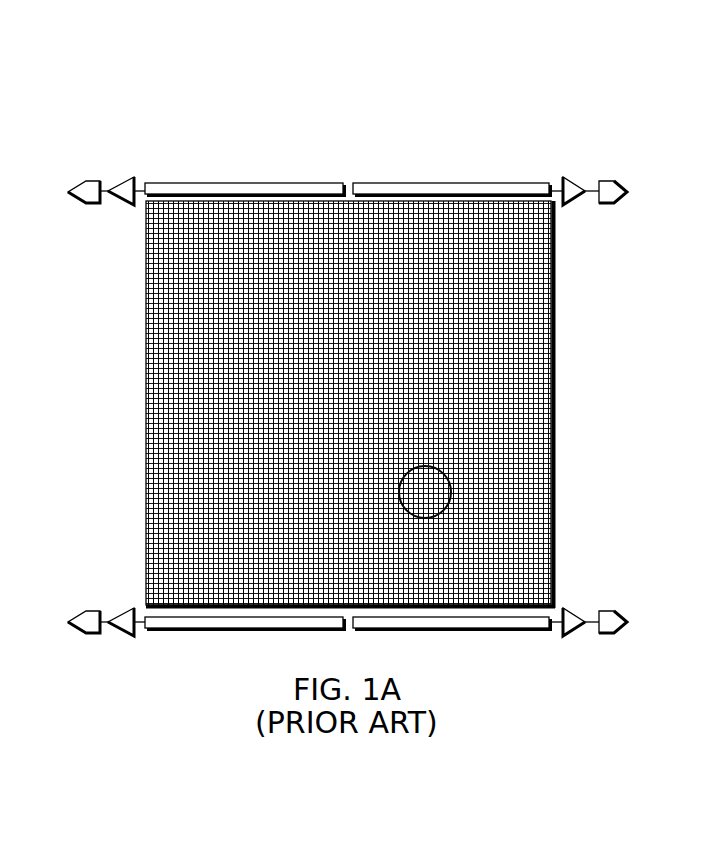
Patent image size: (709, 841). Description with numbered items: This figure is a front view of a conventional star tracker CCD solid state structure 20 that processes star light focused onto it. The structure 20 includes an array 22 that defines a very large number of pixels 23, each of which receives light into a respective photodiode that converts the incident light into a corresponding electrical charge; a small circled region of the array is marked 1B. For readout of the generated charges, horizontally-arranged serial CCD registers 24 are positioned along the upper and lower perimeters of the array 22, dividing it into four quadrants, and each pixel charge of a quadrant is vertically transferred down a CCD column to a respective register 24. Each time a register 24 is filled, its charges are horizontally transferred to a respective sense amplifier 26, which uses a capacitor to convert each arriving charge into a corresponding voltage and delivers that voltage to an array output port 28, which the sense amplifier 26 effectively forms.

The solid state structure 20 is at (381, 384).
The array 22 is at (420, 404).
The pixel 23 is at (516, 458).
The detail region shown in FIG. 1B is at (449, 500).
The serial CCD register 24 is at (495, 630).
The sense amplifier 26 is at (578, 640).
The array output port 28 is at (607, 641).